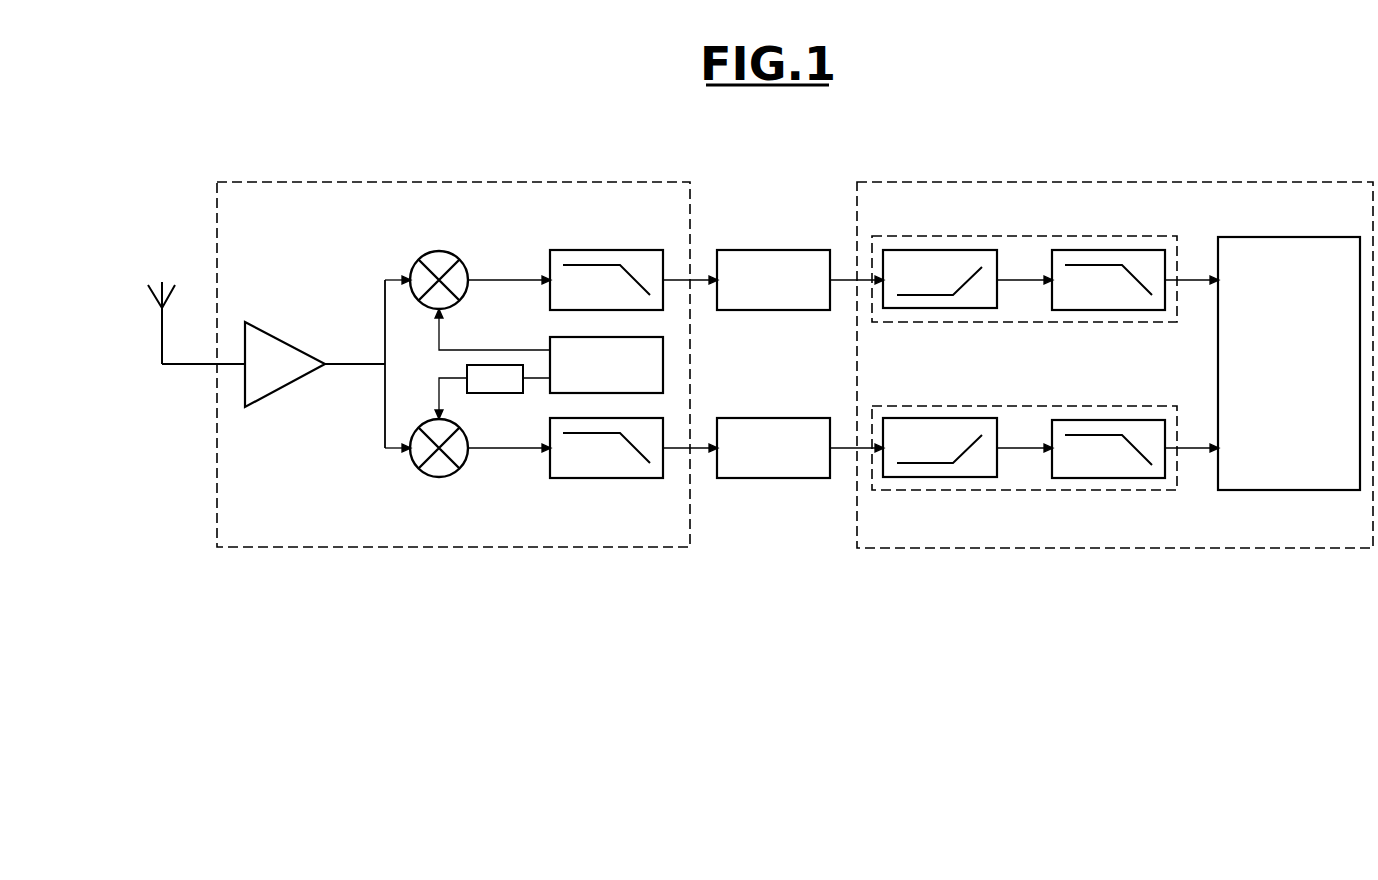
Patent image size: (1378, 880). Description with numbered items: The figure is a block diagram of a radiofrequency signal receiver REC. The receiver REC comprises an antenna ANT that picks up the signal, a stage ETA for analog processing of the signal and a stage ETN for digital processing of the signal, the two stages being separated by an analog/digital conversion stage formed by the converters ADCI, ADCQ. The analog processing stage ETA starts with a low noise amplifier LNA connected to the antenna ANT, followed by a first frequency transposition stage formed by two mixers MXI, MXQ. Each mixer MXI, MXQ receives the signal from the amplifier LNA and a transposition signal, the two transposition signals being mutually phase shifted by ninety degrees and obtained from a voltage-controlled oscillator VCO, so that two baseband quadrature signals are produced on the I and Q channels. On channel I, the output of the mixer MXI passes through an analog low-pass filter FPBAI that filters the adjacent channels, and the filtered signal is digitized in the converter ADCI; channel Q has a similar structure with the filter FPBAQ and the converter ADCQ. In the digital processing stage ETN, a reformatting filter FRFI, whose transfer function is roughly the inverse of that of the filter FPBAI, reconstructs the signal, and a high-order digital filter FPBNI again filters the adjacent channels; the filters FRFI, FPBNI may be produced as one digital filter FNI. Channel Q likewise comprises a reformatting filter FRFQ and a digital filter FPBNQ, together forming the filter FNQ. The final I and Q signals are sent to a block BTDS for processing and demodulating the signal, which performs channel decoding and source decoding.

The antenna ANT is at (148, 294).
The low noise amplifier LNA is at (291, 342).
The analog processing stage ETA is at (523, 338).
The mixer MXI is at (440, 250).
The mixer MXQ is at (440, 478).
The voltage-controlled oscillator VCO is at (549, 351).
The analog low-pass filter FPBAI is at (610, 250).
The analog low-pass filter FPBAQ is at (607, 478).
The analog/digital converter ADCI is at (773, 280).
The analog/digital converter ADCQ is at (773, 448).
The digital processing stage ETN is at (1115, 337).
The digital filter FNI is at (1030, 236).
The digital filter FNQ is at (1028, 406).
The reformatting filter FRFI is at (943, 250).
The reformatting filter FRFQ is at (943, 418).
The digital filter FPBNI is at (1108, 250).
The digital filter FPBNQ is at (1108, 420).
The processing and demodulating block BTDS is at (1289, 363).
The radiofrequency signal receiver REC is at (724, 430).